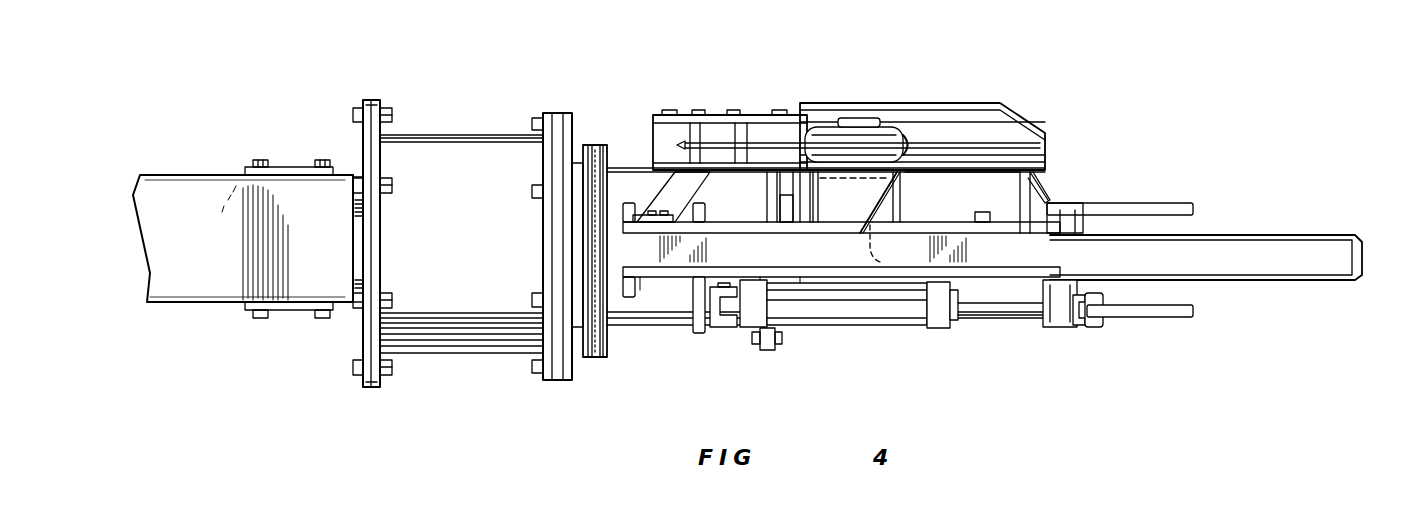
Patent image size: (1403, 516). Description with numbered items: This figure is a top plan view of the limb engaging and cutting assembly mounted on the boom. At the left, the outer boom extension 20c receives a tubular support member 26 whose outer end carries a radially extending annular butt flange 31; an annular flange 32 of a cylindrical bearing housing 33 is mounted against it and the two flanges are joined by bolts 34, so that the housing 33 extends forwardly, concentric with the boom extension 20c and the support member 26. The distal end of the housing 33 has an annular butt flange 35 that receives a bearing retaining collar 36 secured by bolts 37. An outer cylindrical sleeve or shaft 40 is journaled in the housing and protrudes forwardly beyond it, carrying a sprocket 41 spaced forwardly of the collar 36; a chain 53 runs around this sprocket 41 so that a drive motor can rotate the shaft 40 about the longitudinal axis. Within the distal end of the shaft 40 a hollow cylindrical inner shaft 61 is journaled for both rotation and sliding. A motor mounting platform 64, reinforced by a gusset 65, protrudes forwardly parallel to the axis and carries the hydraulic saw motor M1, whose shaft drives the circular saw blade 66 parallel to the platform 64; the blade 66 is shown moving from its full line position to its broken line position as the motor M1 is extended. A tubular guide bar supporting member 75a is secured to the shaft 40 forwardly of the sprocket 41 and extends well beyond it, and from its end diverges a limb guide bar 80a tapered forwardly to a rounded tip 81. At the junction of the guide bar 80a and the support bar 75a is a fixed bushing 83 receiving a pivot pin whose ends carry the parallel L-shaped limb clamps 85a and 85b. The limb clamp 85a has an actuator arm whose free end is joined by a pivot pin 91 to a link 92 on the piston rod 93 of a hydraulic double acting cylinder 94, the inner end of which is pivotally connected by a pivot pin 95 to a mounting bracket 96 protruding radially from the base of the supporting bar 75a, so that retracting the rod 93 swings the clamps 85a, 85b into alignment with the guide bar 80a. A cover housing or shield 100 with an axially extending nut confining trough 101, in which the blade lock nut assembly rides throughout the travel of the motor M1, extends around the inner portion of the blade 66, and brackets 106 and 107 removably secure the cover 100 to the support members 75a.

The outer boom extension 20c is at (202, 188).
The tubular support member 26 is at (358, 233).
The annular butt flange 31 is at (367, 152).
The annular flange 32 is at (380, 102).
The cylindrical bearing housing 33 is at (427, 142).
The bolts 34 is at (357, 113).
The annular butt flange 35 is at (545, 118).
The bearing retaining collar 36 is at (563, 118).
The bolts 37 is at (532, 127).
The outer cylindrical sleeve or shaft 40 is at (630, 170).
The sprocket 41 is at (596, 147).
The chain 53 is at (587, 223).
The hollow cylindrical inner shaft 61 is at (785, 215).
The motor mounting platform 64 is at (900, 175).
The reinforcing gusset 65 is at (870, 192).
The circular saw blade 66 is at (957, 147).
The tubular guide bar supporting member 75a is at (1042, 262).
The limb guide bar 80a is at (1237, 265).
The rounded tips 81 is at (1360, 262).
The fixed bushing 83 is at (1060, 220).
The limb clamp 85a is at (1147, 312).
The limb clamp 85b is at (1147, 205).
The pivot pin 91 is at (1092, 327).
The link 92 is at (1100, 320).
The piston rod 93 is at (987, 317).
The hydraulic double acting cylinder 94 is at (858, 313).
The pivot pin 95 is at (727, 330).
The mounting bracket 96 is at (697, 330).
The cover housing or shield 100 is at (753, 113).
The nut confining trough 101 is at (827, 113).
The bracket 106 is at (700, 180).
The bracket 107 is at (1035, 198).
The hydraulic saw motor M1 is at (893, 225).